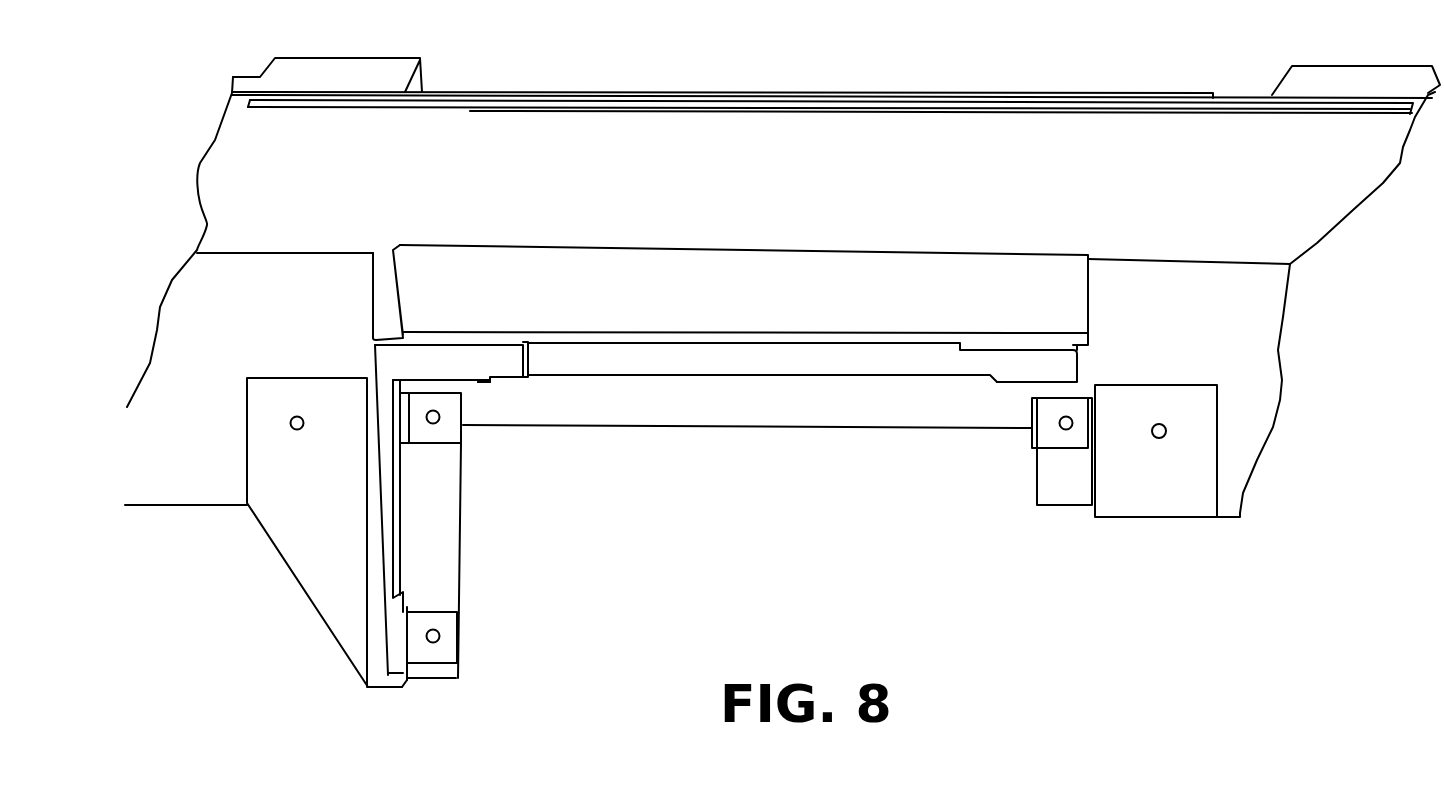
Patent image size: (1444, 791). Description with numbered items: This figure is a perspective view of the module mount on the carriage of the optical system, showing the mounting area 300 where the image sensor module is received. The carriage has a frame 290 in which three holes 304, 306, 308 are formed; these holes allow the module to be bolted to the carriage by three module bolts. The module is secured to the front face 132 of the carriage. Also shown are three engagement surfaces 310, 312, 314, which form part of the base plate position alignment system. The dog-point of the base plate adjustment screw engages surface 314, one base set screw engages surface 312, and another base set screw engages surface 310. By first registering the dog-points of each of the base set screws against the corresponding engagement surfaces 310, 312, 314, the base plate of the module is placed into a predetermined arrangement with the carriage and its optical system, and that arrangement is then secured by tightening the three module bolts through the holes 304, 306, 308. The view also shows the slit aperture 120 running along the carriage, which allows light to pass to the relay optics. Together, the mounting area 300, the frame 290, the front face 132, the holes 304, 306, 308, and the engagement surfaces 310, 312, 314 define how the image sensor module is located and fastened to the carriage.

The slit aperture 120 is at (760, 107).
The frame 290 is at (993, 92).
The mounting area 300 is at (1005, 553).
The hole 304 is at (1060, 425).
The hole 306 is at (440, 423).
The hole 308 is at (440, 637).
The engagement surface 310 is at (1017, 387).
The engagement surface 312 is at (480, 385).
The engagement surface 314 is at (420, 650).
The front face 132 is at (1133, 360).